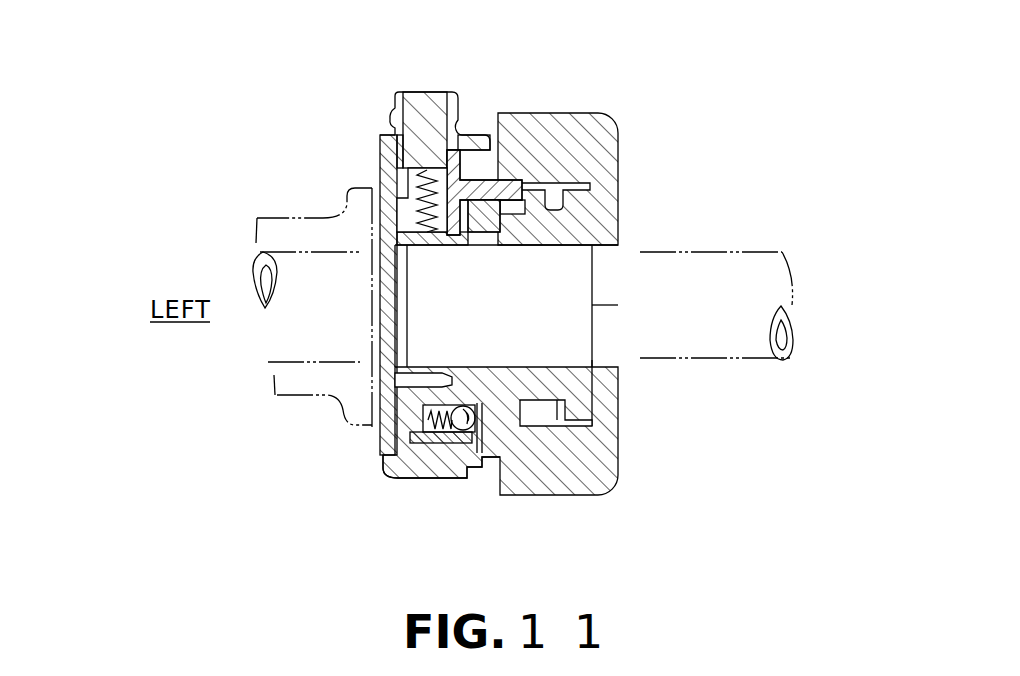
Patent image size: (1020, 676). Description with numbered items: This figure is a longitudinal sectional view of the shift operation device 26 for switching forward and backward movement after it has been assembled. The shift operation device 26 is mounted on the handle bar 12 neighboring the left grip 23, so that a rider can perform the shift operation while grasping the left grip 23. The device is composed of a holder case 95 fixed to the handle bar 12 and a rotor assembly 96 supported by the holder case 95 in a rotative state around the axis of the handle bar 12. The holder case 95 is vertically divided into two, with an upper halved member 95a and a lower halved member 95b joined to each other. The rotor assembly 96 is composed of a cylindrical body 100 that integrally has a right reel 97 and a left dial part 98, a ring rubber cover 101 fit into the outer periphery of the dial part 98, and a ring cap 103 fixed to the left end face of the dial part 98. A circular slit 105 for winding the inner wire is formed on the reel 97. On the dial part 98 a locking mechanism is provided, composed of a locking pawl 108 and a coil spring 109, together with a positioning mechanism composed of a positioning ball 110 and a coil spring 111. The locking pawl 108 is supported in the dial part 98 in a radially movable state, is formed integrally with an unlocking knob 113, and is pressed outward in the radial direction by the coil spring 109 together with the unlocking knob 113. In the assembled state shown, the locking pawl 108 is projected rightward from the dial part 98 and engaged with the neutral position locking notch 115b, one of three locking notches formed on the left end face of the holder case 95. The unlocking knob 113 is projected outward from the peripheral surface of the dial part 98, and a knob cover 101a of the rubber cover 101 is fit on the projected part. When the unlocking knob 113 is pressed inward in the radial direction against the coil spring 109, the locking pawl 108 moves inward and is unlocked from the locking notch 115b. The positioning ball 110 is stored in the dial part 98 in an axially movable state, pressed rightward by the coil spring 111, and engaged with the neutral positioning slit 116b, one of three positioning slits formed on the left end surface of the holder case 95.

The handle bar 12 is at (743, 360).
The left grip 23 is at (297, 397).
The shift operation device 26 is at (733, 125).
The holder case 95 is at (573, 309).
The upper halved member 95a is at (605, 238).
The lower halved member 95b is at (654, 346).
The rotor assembly 96 is at (375, 117).
The reel 97 is at (583, 412).
The dial part 98 is at (437, 445).
The cylindrical body 100 is at (578, 218).
The rubber cover 101 is at (403, 478).
The knob cover 101a is at (394, 96).
The ring cap 103 is at (385, 295).
The circular slit 105 is at (560, 427).
The locking pawl 108 is at (480, 183).
The coil spring 109 is at (418, 195).
The positioning ball 110 is at (460, 406).
The coil spring 111 is at (427, 419).
The unlocking knob 113 is at (425, 93).
The neutral position locking notch 115b is at (482, 210).
The neutral positioning slit 116b is at (503, 437).